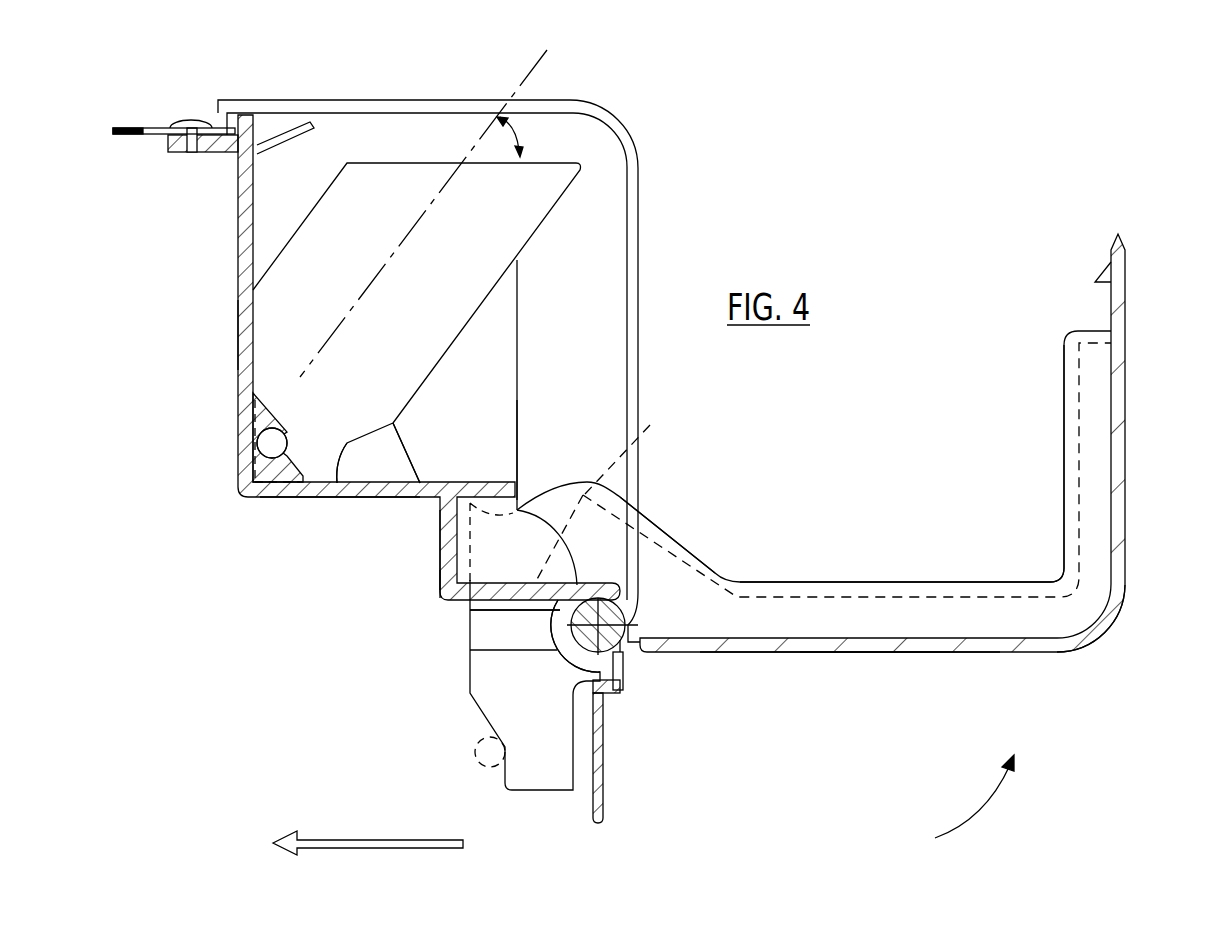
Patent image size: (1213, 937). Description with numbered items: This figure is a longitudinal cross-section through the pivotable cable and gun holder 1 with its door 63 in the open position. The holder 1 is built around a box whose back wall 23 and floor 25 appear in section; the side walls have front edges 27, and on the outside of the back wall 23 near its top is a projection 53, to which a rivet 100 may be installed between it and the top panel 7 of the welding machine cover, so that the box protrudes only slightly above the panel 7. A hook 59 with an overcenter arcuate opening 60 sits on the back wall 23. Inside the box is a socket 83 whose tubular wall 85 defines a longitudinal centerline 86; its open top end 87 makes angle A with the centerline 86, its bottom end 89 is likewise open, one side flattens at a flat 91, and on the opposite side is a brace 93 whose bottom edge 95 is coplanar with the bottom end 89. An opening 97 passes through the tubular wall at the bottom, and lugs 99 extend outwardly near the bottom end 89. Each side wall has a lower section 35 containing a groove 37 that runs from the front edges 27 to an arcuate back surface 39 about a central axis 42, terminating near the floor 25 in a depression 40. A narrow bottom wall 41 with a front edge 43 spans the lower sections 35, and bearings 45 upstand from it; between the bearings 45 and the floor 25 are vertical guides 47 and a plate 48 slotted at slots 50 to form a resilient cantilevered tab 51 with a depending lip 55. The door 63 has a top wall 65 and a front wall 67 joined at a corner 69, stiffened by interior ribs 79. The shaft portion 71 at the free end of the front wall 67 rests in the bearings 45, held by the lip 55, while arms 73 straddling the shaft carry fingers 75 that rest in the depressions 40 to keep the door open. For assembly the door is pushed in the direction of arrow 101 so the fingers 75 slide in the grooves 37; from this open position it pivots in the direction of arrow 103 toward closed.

The pivotable cable and gun holder 1 is at (282, 685).
The top panel 7 is at (125, 128).
The back wall 23 is at (240, 247).
The floor 25 is at (470, 487).
The front edges 27 is at (640, 217).
The lower section 35 is at (497, 697).
The groove 37 is at (493, 630).
The back surface 39 is at (485, 720).
The depression 40 is at (437, 540).
The bottom wall 41 is at (607, 690).
The central axis 42 is at (617, 613).
The front edge 43 is at (623, 670).
The bearings 45 is at (623, 652).
The vertical guides 47 is at (537, 575).
The plate 48 is at (530, 583).
The slots 50 is at (650, 425).
The cantilevered tab 51 is at (555, 605).
The projection 53 is at (225, 150).
The lip 55 is at (628, 600).
The hook 59 is at (267, 422).
The arcuate opening 60 is at (288, 445).
The door 63 is at (873, 665).
The top wall 65 is at (1116, 406).
The front wall 67 is at (1001, 652).
The corner 69 is at (1104, 624).
The shaft portion 71 is at (562, 648).
The arms 73 is at (653, 530).
The finger 75 is at (435, 576).
The interior ribs 79 is at (852, 615).
The socket 83 is at (365, 150).
The tubular wall 85 is at (375, 242).
The longitudinal centerline 86 is at (532, 70).
The top end 87 is at (543, 160).
The bottom end 89 is at (300, 498).
The flat 91 is at (237, 335).
The brace 93 is at (485, 425).
The bottom edge 95 is at (422, 498).
The opening 97 is at (350, 463).
The lugs 99 is at (263, 447).
The rivet 100 is at (185, 122).
The arrow 101 is at (383, 850).
The arrow 103 is at (967, 822).